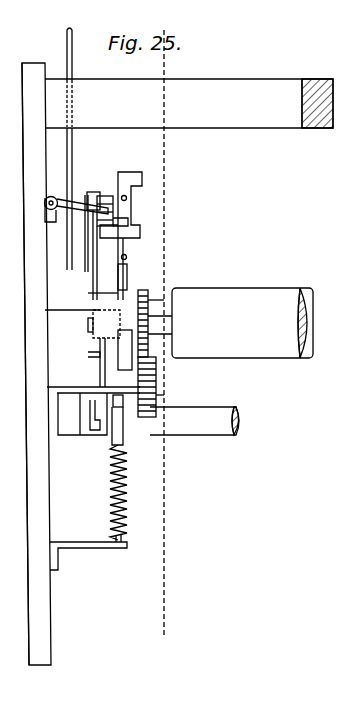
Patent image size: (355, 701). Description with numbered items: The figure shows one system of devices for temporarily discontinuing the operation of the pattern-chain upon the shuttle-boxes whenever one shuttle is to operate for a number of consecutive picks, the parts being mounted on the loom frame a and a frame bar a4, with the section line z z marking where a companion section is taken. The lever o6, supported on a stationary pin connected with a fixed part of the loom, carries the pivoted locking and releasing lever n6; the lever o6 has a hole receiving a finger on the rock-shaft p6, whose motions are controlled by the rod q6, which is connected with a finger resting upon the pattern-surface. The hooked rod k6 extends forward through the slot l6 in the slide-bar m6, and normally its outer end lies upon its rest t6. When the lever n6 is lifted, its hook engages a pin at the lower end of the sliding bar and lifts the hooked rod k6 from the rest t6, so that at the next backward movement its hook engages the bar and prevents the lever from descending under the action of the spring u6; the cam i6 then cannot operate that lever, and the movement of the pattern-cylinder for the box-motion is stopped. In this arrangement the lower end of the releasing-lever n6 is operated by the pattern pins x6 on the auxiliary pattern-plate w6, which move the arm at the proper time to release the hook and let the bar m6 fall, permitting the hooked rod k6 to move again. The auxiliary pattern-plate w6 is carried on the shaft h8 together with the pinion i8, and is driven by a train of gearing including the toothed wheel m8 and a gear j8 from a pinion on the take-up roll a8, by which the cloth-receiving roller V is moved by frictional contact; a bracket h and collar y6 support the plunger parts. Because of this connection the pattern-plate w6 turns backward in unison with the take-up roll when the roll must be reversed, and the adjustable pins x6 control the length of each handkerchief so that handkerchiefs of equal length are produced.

The frame a is at (36, 364).
The frame bar a4 is at (189, 103).
The roll a8 is at (242, 323).
The roller V is at (194, 421).
The section line z is at (163, 334).
The rod q6 is at (78, 149).
The rock-shaft p6 is at (45, 203).
The lever o6 is at (100, 239).
The slide-bar m6 is at (136, 190).
The locking and releasing lever n6 is at (128, 215).
The slot l6 is at (130, 266).
The hooked rod k6 is at (128, 280).
The rest t6 is at (88, 340).
The gear j8 is at (151, 323).
The shaft h8 is at (160, 332).
The toothed wheel m8 is at (157, 373).
The pinion i8 is at (167, 396).
The auxiliary pattern-plate w6 is at (80, 366).
The frame h is at (90, 436).
The pattern pins x6 is at (88, 418).
The collar y6 is at (124, 400).
The cam i6 is at (125, 427).
The spring u6 is at (128, 489).